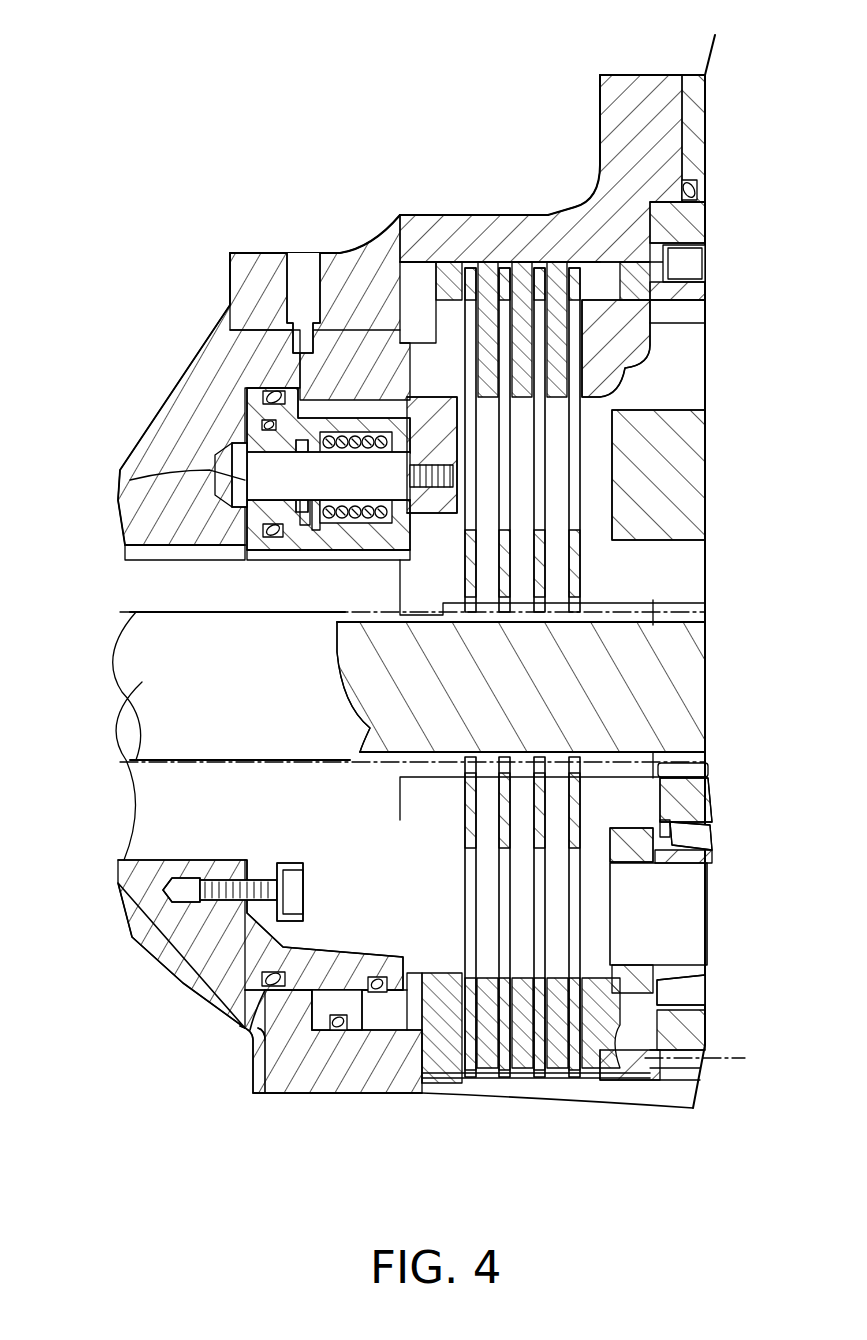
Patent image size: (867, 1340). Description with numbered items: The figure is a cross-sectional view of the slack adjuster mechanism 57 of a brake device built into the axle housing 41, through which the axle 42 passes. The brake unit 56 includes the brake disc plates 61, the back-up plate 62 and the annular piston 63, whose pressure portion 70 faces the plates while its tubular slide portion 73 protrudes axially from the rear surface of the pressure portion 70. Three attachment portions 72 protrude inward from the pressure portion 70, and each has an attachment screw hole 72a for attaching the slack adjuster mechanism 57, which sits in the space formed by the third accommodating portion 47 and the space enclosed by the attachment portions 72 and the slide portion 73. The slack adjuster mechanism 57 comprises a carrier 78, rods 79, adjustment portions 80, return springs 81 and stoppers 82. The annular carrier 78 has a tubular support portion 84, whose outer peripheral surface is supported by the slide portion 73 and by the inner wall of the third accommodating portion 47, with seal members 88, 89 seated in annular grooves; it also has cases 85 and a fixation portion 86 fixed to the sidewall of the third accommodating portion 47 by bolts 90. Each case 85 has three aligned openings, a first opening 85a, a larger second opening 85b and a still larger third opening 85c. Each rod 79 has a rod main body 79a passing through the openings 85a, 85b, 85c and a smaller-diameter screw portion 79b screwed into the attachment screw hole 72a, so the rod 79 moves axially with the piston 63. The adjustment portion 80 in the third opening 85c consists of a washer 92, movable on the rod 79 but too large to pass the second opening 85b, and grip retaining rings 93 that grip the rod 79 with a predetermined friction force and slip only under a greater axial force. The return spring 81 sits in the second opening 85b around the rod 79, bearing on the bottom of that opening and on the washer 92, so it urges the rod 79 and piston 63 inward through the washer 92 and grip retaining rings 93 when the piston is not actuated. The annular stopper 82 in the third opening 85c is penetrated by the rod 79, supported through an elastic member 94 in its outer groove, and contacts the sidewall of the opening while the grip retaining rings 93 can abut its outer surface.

The axle housing 41 is at (605, 80).
The axle 42 is at (186, 747).
The third accommodating portion 47 is at (245, 430).
The brake unit 56 is at (603, 570).
The slack adjuster mechanism 57 is at (420, 415).
The brake disc plates 61 is at (578, 282).
The back-up plate 62 is at (612, 347).
The piston 63 is at (425, 262).
The pressure portion 70 is at (400, 300).
The attachment portion 72 is at (445, 513).
The attachment screw hole 72a is at (455, 468).
The slide portion 73 is at (312, 262).
The carrier 78 is at (340, 560).
The rod 79 is at (232, 470).
The rod main body 79a is at (232, 500).
The screw portion 79b is at (430, 487).
The adjustment portion 80 is at (250, 390).
The return spring 81 is at (340, 525).
The stopper 82 is at (240, 545).
The support portion 84 is at (340, 955).
The case 85 is at (273, 540).
The first opening 85a is at (452, 450).
The second opening 85b is at (272, 390).
The third opening 85c is at (305, 525).
The fixation portion 86 is at (250, 880).
The seal member 88 is at (362, 1085).
The seal member 89 is at (240, 1028).
The bolt 90 is at (300, 890).
The washer 92 is at (316, 530).
The grip retaining rings 93 is at (300, 512).
The elastic member 94 is at (262, 425).